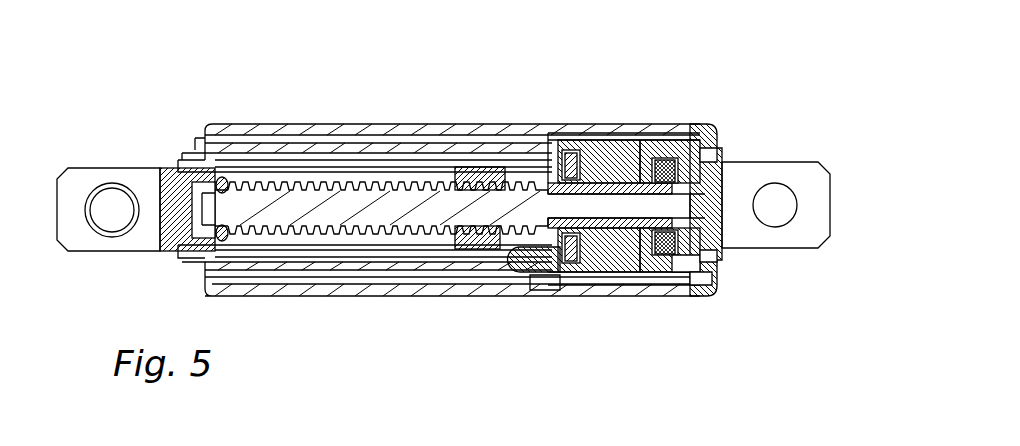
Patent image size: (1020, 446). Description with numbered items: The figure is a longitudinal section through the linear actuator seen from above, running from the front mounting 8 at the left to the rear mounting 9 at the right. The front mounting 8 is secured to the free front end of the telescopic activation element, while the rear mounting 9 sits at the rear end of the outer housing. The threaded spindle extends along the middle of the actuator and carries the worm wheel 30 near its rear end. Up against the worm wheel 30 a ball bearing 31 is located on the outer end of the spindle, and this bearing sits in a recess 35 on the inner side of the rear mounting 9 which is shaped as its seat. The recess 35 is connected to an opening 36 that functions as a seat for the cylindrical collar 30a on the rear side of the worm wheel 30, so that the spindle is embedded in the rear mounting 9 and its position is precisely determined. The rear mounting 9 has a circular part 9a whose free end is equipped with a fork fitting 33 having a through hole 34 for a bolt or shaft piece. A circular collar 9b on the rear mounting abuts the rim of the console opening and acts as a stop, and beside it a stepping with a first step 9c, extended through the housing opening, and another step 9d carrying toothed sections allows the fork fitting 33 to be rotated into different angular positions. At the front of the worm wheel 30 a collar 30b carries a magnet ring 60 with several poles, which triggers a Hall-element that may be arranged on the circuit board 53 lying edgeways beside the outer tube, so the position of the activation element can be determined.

The front mounting 8 is at (103, 160).
The rear mounting 9 is at (776, 152).
The circular part 9a is at (708, 157).
The circular collar 9b is at (681, 292).
The first step 9c is at (713, 265).
The other step 9d is at (704, 290).
The worm wheel 30 is at (572, 127).
The cylindrical collar 30a is at (610, 128).
The collar 30b is at (591, 276).
The ball bearing 31 is at (657, 292).
The fork fitting 33 is at (802, 177).
The eye bore 34 is at (775, 207).
The recess 35 is at (665, 130).
The opening 36 is at (645, 130).
The circuit board 53 is at (370, 270).
The magnet ring 60 is at (566, 268).